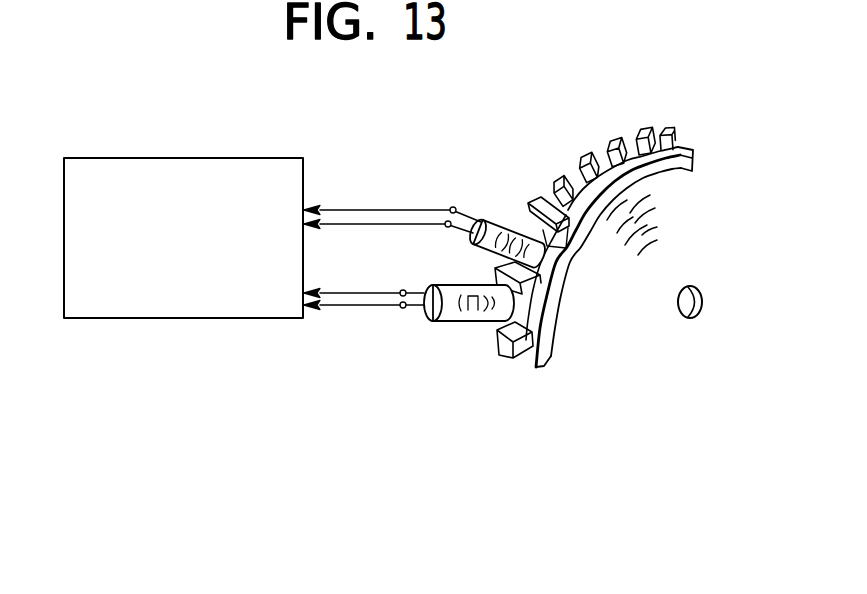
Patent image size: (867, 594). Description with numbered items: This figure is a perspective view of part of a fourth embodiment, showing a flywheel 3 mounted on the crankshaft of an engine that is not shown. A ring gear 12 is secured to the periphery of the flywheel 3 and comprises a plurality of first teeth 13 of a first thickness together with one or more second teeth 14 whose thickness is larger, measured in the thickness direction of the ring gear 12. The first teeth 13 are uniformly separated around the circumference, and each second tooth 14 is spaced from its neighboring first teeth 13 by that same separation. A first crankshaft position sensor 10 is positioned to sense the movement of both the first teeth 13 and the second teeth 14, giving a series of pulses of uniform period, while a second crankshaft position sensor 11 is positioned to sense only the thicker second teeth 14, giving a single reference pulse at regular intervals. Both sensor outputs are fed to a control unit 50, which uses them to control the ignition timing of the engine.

The flywheel 3 is at (695, 237).
The first crankshaft position sensor 10 is at (420, 287).
The second crankshaft position sensor 11 is at (469, 218).
The ring gear 12 is at (553, 331).
The first teeth 13 is at (610, 131).
The second teeth 14 is at (525, 204).
The control unit 50 is at (195, 158).